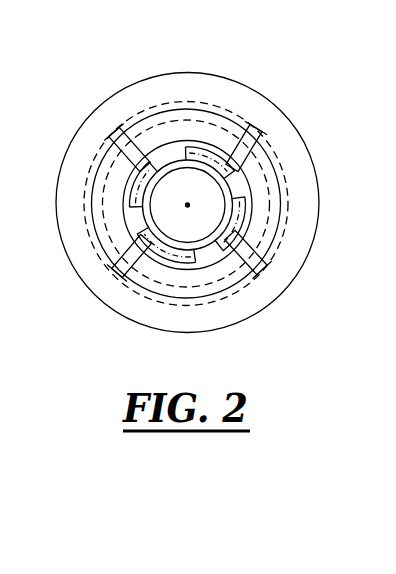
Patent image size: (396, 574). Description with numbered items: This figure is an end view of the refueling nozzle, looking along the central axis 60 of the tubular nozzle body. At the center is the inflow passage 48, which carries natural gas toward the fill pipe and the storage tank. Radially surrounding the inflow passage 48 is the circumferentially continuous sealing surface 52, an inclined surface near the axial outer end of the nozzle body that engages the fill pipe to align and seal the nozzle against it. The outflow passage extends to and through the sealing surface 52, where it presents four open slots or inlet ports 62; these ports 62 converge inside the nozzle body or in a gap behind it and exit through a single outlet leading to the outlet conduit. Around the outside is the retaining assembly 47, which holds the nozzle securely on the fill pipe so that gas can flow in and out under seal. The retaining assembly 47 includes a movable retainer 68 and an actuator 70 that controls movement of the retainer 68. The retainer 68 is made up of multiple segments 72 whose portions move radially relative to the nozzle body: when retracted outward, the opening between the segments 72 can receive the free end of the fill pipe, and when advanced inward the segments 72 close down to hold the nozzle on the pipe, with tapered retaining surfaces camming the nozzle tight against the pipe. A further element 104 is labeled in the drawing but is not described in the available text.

The actuator 70 is at (221, 90).
The inflow passage 48 is at (175, 190).
The central axis 60 is at (190, 204).
The inlet ports 62 is at (137, 200).
The segments 72 is at (157, 270).
The sealing surface 52 is at (200, 250).
The retaining assembly 47 is at (0, 74).
The retainer 68 is at (0, 118).
The element 104 is at (0, 300).